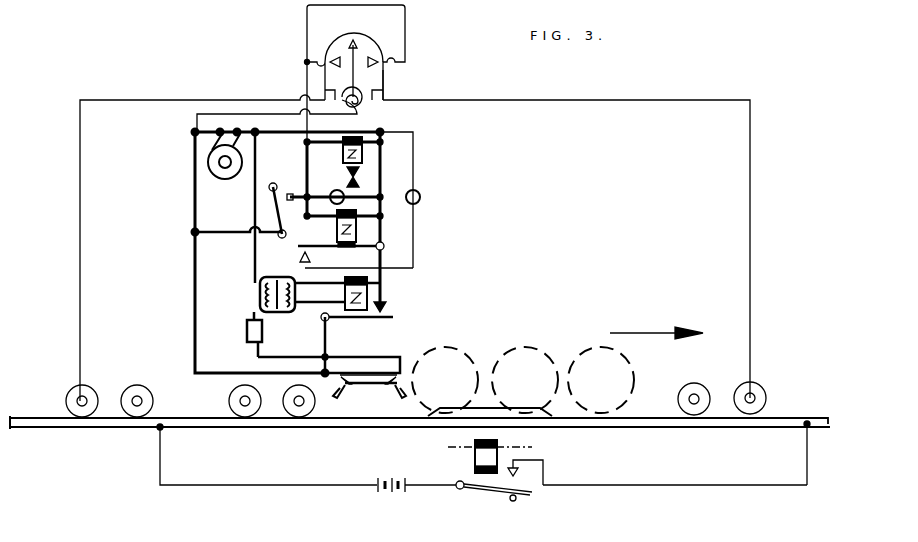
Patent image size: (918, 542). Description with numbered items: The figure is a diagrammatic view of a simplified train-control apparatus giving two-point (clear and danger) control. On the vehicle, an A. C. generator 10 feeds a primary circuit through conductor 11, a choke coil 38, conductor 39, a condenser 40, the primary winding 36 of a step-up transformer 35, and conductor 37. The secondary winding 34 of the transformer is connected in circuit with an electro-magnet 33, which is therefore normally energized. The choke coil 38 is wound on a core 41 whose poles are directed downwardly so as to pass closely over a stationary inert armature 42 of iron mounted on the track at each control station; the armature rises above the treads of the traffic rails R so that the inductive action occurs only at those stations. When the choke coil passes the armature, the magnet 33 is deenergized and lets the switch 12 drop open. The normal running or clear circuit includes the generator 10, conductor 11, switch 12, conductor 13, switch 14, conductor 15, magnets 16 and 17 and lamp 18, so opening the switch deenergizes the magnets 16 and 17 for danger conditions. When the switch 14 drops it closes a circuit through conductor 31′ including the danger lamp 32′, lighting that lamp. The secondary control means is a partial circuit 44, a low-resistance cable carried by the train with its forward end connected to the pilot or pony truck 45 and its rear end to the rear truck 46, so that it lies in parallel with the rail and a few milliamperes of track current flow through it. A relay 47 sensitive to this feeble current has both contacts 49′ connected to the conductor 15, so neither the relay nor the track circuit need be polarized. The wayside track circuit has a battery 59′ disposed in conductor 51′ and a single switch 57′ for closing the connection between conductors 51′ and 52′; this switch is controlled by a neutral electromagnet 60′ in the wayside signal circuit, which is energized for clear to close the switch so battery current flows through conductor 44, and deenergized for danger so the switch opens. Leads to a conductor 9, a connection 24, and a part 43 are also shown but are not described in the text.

The conductor 9 is at (358, 118).
The A. C. generator 10 is at (218, 161).
The conductor 11 is at (195, 262).
The switch 12 is at (395, 316).
The conductor 13 is at (385, 279).
The switch 14 is at (362, 250).
The conductor 15 is at (405, 22).
The magnet 16 is at (337, 236).
The magnet 17 is at (365, 152).
The lamp 18 is at (336, 190).
The conductor 24 is at (218, 232).
The conductor 31′ is at (415, 234).
The danger lamp 32′ is at (418, 191).
The electro-magnet 33 is at (386, 300).
The secondary winding 34 is at (295, 311).
The step-up transformer 35 is at (278, 277).
The primary winding 36 is at (262, 292).
The conductor 37 is at (250, 183).
The choke coil 38 is at (350, 392).
The conductor 39 is at (258, 354).
The condenser 40 is at (247, 330).
The core 41 is at (390, 392).
The armature 42 is at (485, 403).
The lever 43 is at (270, 198).
The partial circuit 44 is at (80, 222).
The pilot or pony truck 45 is at (750, 398).
The rear truck 46 is at (353, 42).
The relay 47 is at (383, 82).
The contacts 49′ is at (370, 62).
The conductor 51′ is at (272, 487).
The conductor 52′ is at (735, 485).
The switch 57′ is at (505, 494).
The battery 59′ is at (392, 497).
The neutral electromagnet 60′ is at (475, 458).
The traffic rails R is at (632, 421).